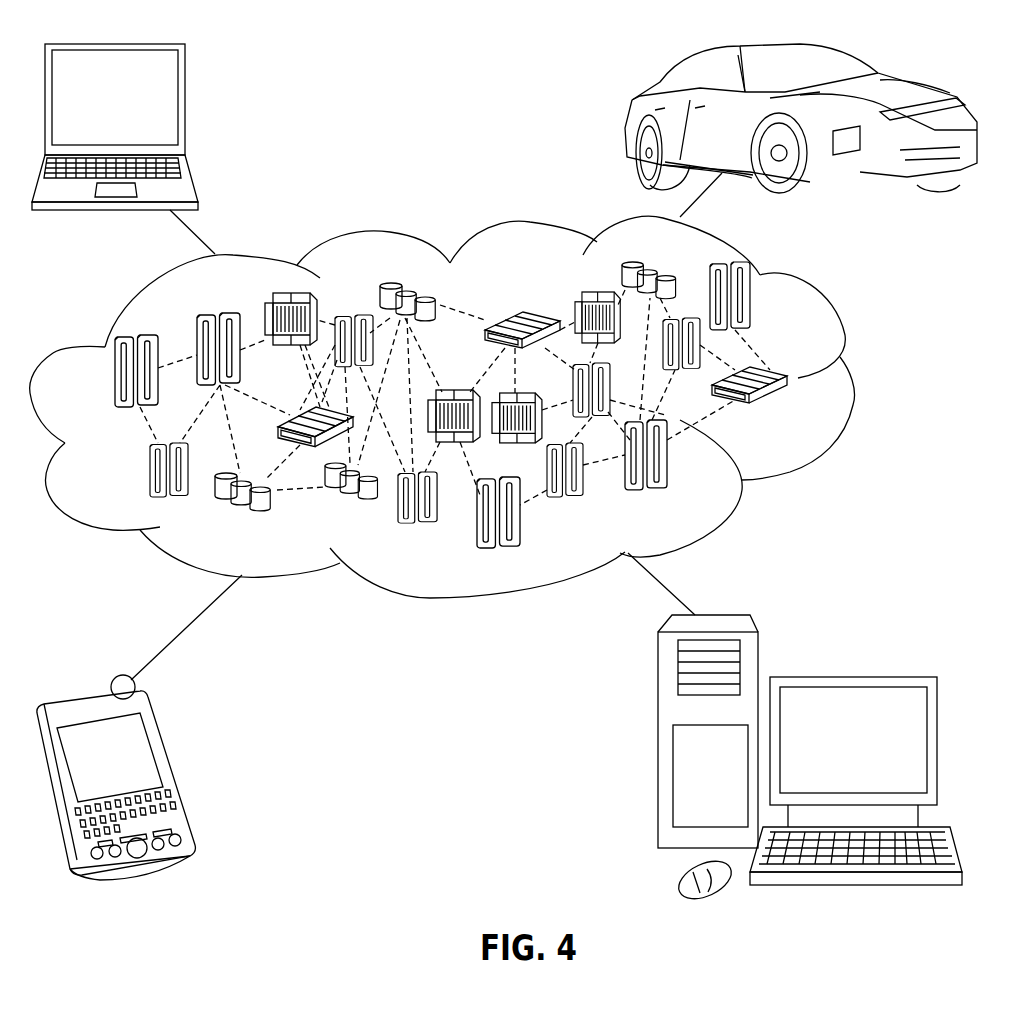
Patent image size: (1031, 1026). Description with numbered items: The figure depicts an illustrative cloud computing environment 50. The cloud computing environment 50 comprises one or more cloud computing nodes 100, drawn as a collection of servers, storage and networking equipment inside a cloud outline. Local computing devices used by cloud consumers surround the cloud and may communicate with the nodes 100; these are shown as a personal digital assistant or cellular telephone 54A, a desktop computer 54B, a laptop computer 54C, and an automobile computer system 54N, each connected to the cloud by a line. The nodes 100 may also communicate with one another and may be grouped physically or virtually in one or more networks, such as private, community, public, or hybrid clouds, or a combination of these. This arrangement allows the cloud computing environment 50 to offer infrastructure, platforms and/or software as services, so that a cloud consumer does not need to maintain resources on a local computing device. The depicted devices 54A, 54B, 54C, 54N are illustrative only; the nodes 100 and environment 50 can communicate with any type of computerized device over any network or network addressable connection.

The cloud computing environment 50 is at (852, 382).
The cloud computing nodes 100 is at (798, 413).
The personal digital assistant or cellular telephone 54A is at (173, 771).
The desktop computer 54B is at (850, 677).
The laptop computer 54C is at (185, 105).
The automobile computer system 54N is at (627, 122).